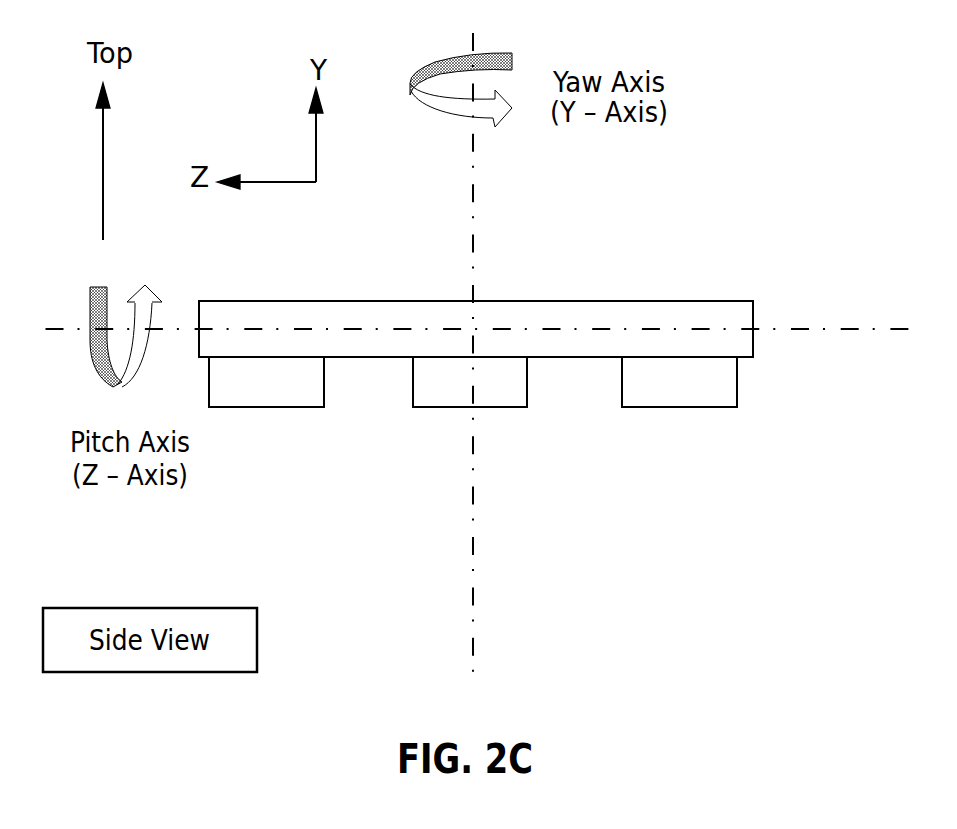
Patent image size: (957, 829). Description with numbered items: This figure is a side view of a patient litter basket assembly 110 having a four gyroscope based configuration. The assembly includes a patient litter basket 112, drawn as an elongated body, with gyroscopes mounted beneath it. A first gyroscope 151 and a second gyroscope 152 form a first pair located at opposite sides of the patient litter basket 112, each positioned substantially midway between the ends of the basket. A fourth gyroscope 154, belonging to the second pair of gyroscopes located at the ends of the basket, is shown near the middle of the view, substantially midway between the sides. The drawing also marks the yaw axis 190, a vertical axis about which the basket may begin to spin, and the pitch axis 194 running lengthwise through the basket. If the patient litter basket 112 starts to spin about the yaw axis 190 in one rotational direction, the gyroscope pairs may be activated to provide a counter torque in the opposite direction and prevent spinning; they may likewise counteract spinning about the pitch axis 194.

The patient litter basket assembly 110 is at (567, 259).
The patient litter basket 112 is at (362, 300).
The first gyroscope 151 is at (707, 397).
The second gyroscope 152 is at (290, 388).
The fourth gyroscope 154 is at (431, 387).
The yaw axis 190 is at (472, 225).
The pitch axis 194 is at (806, 329).